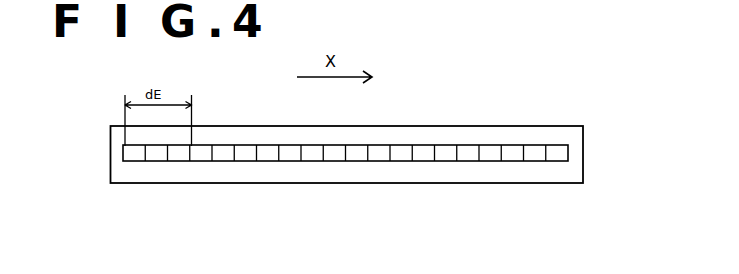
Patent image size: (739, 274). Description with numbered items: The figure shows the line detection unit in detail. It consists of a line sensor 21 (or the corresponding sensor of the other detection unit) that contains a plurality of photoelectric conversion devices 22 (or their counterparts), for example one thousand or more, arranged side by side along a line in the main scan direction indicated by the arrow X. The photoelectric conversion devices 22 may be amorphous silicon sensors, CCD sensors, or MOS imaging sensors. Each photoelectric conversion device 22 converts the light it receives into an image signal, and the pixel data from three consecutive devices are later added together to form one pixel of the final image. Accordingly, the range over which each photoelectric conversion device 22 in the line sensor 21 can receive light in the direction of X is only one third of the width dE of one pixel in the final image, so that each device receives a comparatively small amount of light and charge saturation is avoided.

The line sensor 21 is at (518, 126).
The photoelectric conversion device 22 is at (513, 156).